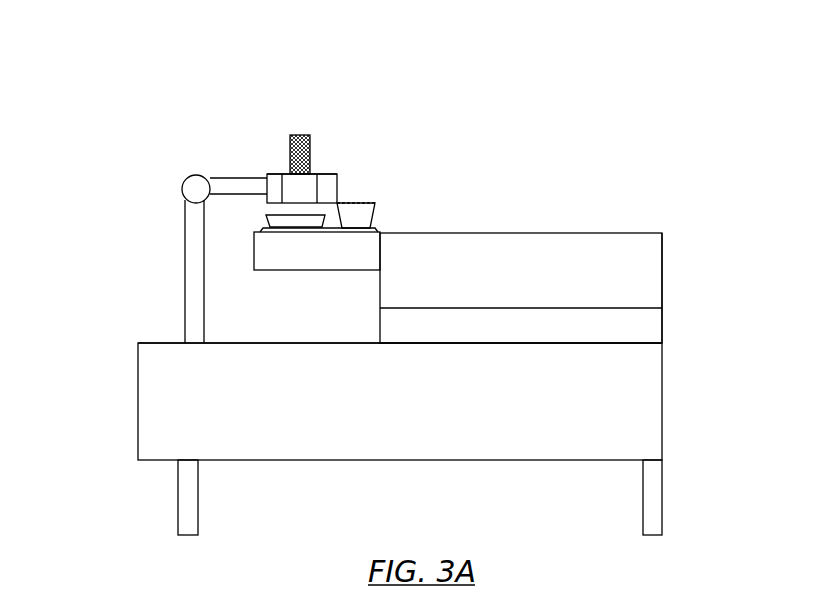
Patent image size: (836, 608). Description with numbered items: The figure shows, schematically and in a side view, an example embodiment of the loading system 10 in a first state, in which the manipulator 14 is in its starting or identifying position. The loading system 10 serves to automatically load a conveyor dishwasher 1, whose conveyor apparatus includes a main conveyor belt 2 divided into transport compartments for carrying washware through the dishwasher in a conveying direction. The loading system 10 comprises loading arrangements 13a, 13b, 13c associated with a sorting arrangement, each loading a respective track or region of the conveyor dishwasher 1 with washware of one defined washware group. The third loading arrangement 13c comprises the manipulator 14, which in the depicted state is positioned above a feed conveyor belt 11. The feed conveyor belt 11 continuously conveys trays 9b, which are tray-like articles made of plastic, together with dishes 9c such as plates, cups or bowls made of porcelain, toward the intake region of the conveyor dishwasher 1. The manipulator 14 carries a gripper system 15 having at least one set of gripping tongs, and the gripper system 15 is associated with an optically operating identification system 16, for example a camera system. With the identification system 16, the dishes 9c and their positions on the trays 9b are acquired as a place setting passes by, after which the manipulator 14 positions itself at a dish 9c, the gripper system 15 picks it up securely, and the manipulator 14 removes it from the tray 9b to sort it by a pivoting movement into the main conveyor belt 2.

The conveyor dishwasher 1 is at (587, 410).
The main conveyor belt 2 is at (230, 343).
The trays and tray-like articles 9b is at (378, 230).
The dishes 9c is at (277, 213).
The loading system 10 is at (90, 191).
The feed conveyor belt 11 is at (256, 241).
The first loading arrangement 13a is at (532, 212).
The second loading arrangement 13b is at (658, 212).
The third loading arrangement 13c is at (387, 68).
The manipulator 14 is at (220, 183).
The gripper system 15 is at (277, 180).
The optically operating identification system 16 is at (311, 145).